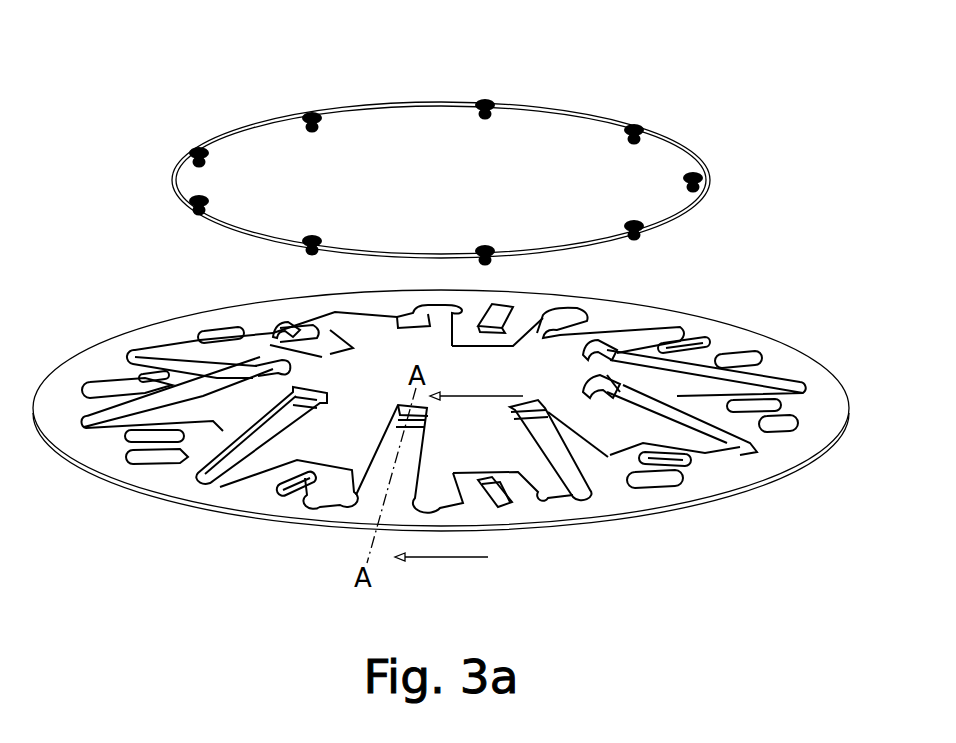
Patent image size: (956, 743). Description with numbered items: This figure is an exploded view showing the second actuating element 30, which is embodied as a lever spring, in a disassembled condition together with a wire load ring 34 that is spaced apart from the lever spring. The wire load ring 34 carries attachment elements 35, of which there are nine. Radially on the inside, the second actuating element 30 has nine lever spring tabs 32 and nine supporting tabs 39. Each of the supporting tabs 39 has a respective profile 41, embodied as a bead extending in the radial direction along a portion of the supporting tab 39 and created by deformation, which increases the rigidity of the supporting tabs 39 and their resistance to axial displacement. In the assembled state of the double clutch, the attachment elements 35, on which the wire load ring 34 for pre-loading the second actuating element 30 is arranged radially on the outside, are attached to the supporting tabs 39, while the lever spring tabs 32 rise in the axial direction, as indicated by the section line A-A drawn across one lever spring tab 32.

The second actuating element 30 is at (782, 368).
The lever spring tab 32 is at (207, 456).
The wire load ring 34 is at (690, 148).
The attachment element 35 is at (313, 114).
The supporting tab 39 is at (277, 475).
The profile 41 is at (690, 342).